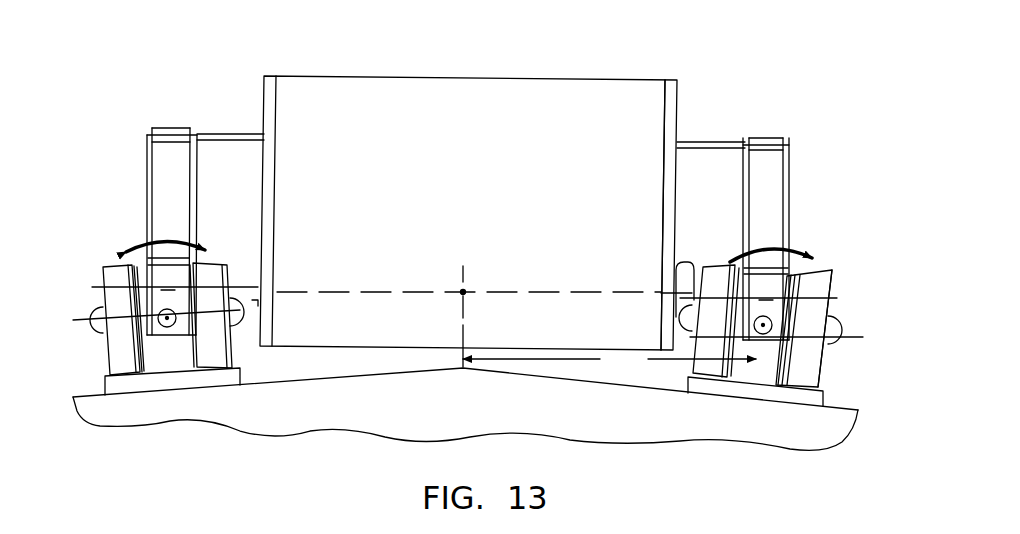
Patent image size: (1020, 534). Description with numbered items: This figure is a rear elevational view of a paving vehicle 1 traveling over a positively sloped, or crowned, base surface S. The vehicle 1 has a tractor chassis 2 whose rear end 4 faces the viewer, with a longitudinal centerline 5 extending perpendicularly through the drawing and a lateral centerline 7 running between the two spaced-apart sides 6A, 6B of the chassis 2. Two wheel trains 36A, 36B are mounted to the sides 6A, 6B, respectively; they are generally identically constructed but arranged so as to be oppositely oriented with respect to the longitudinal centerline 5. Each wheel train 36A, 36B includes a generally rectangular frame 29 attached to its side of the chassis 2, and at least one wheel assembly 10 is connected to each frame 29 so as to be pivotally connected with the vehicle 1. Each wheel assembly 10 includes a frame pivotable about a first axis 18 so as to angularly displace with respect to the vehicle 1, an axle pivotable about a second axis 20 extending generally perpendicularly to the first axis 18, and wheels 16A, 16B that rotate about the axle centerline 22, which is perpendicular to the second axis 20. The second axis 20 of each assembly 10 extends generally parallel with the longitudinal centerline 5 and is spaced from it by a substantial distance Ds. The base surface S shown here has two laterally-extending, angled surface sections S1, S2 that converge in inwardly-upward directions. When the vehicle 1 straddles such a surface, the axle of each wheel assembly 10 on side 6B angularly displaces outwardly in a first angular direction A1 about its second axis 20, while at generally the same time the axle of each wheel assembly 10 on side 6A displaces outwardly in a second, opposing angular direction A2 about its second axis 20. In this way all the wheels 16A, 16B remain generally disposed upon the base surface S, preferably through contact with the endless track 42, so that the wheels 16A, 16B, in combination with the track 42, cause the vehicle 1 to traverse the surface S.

The paving vehicle 1 is at (437, 42).
The chassis 2 is at (528, 98).
The rear end 4 is at (631, 97).
The longitudinal centerline 5 is at (464, 291).
The side 6A is at (264, 107).
The side 6B is at (677, 112).
The lateral centerline 7 is at (606, 292).
The wheel assembly 10 is at (78, 301).
The wheel 16A is at (110, 278).
The wheel 16B is at (230, 358).
The first axis 18 is at (830, 300).
The second axis 20 is at (167, 328).
The longitudinal centerline of the axle 22 is at (238, 294).
The frame 29 is at (147, 160).
The wheel train 36A is at (110, 226).
The wheel train 36B is at (845, 212).
The endless track 42 is at (176, 378).
The first angular direction A1 is at (771, 243).
The second angular direction A2 is at (165, 233).
The distance Ds is at (609, 362).
The base surface S is at (366, 374).
The angled surface section S1 is at (80, 396).
The angled surface section S2 is at (843, 410).